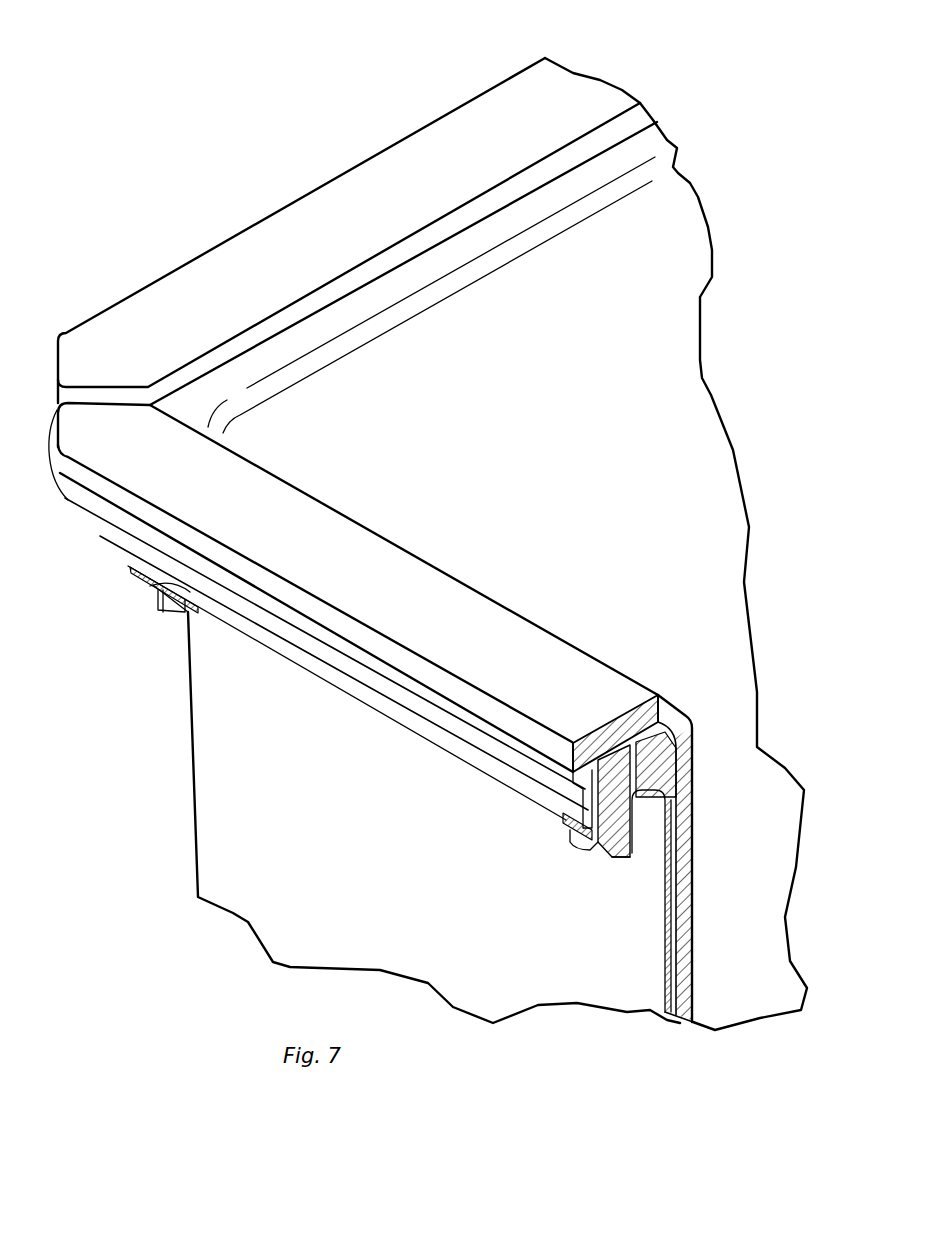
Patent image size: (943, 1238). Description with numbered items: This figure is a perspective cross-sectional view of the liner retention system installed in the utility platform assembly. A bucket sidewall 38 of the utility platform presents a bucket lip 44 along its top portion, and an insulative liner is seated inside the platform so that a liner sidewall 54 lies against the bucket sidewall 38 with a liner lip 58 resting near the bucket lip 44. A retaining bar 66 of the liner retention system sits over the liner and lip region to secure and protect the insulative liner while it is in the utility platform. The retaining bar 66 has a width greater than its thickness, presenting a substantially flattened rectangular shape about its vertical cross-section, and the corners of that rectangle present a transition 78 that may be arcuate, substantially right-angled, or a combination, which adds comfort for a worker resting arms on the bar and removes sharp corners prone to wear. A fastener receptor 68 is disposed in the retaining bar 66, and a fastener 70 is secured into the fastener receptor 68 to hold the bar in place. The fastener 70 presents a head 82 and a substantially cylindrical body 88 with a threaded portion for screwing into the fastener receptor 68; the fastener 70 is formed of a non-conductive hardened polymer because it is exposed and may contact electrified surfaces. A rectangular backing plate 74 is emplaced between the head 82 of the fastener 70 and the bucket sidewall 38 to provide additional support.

The bucket sidewall 38 is at (213, 838).
The bucket lip 44 is at (105, 547).
The liner sidewall 54 is at (675, 411).
The liner lip 58 is at (103, 515).
The retaining bar 66 is at (107, 417).
The fastener receptor 68 is at (645, 757).
The fastener 70 is at (187, 610).
The backing plate 74 is at (137, 578).
The transition 78 is at (568, 735).
The head 82 is at (160, 618).
The cylindrical body 88 is at (640, 799).